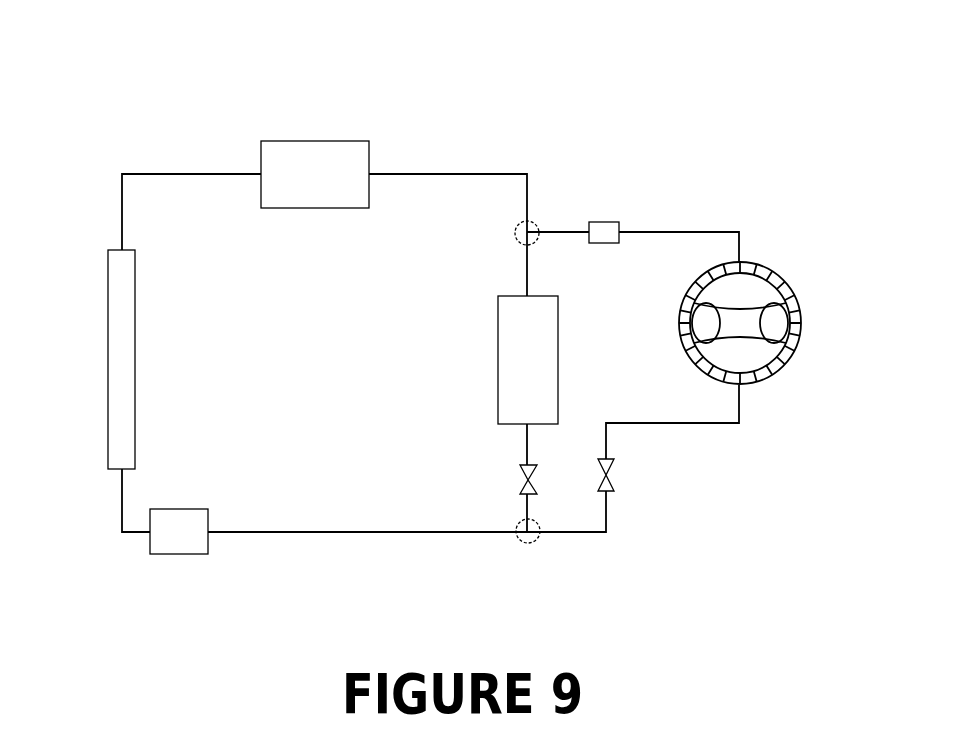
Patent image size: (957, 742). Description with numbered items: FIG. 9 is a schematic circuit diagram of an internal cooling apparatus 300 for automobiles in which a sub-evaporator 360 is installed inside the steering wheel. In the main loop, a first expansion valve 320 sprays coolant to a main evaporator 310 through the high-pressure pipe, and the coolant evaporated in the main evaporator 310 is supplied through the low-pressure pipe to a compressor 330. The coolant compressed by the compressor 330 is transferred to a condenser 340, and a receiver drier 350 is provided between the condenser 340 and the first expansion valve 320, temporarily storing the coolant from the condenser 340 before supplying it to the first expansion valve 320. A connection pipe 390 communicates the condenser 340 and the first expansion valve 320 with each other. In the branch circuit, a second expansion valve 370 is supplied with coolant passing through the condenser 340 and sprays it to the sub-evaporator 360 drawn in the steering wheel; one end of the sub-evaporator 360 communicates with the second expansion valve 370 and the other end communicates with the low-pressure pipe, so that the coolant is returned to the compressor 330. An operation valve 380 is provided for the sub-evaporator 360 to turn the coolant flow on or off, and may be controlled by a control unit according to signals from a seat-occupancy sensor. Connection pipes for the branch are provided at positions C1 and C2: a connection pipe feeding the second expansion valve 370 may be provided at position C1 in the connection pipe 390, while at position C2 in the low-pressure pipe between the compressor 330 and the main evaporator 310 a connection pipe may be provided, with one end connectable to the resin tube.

The internal cooling apparatus 300 is at (550, 110).
The main evaporator 310 is at (498, 350).
The first expansion valve 320 is at (533, 483).
The compressor 330 is at (306, 141).
The condenser 340 is at (108, 303).
The receiver drier 350 is at (178, 556).
The sub-evaporator 360 is at (810, 314).
The second expansion valve 370 is at (616, 478).
The operation valve 380 is at (604, 221).
The connection pipe 390 is at (345, 534).
The position C1 is at (517, 541).
The position C2 is at (514, 233).